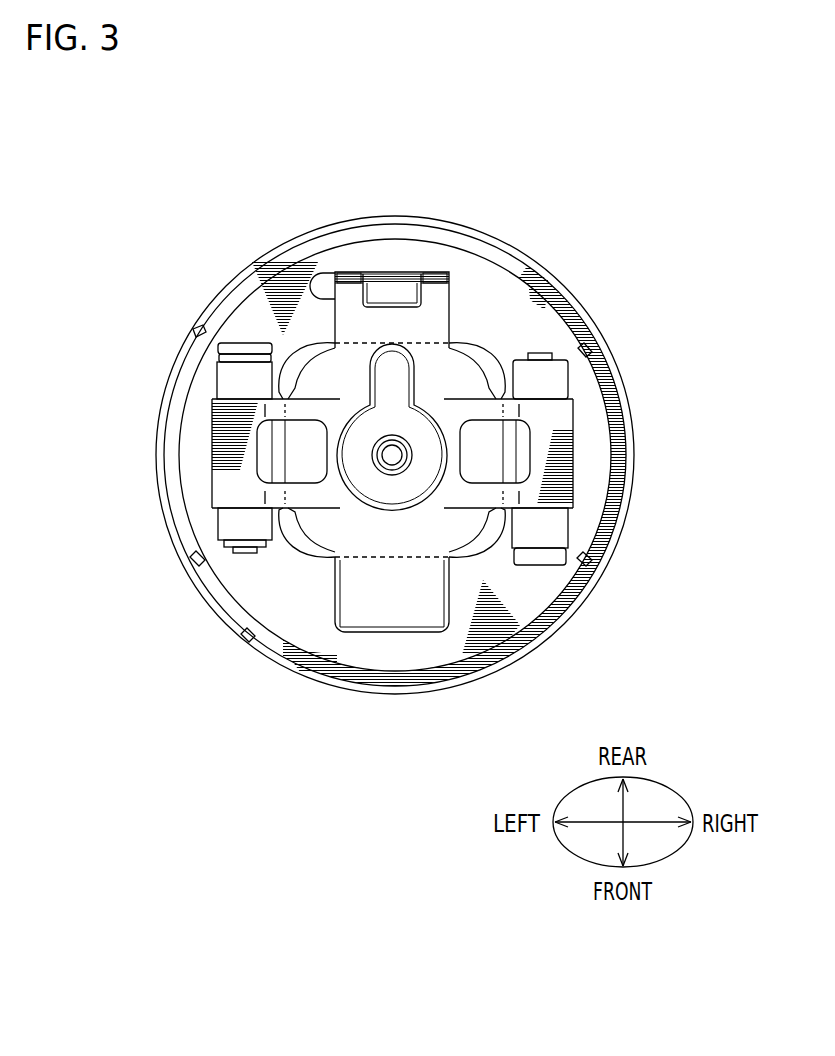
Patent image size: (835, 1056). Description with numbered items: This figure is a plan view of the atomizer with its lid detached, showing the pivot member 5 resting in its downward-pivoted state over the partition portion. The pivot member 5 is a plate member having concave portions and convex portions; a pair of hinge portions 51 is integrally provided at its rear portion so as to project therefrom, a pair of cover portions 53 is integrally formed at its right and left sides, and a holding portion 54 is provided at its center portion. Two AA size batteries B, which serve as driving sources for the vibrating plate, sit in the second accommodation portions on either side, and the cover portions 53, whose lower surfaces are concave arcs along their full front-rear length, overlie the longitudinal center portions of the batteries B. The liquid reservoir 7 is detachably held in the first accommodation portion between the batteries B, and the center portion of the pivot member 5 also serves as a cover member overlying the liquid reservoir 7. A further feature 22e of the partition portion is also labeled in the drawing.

The pivot member 5 is at (452, 329).
The liquid reservoir 7 is at (471, 373).
The engaging recess 22e is at (395, 280).
The hinge portions 51 is at (348, 280).
The cover portions 53 is at (233, 433).
The holding portion 54 is at (370, 480).
The batteries B is at (232, 382).